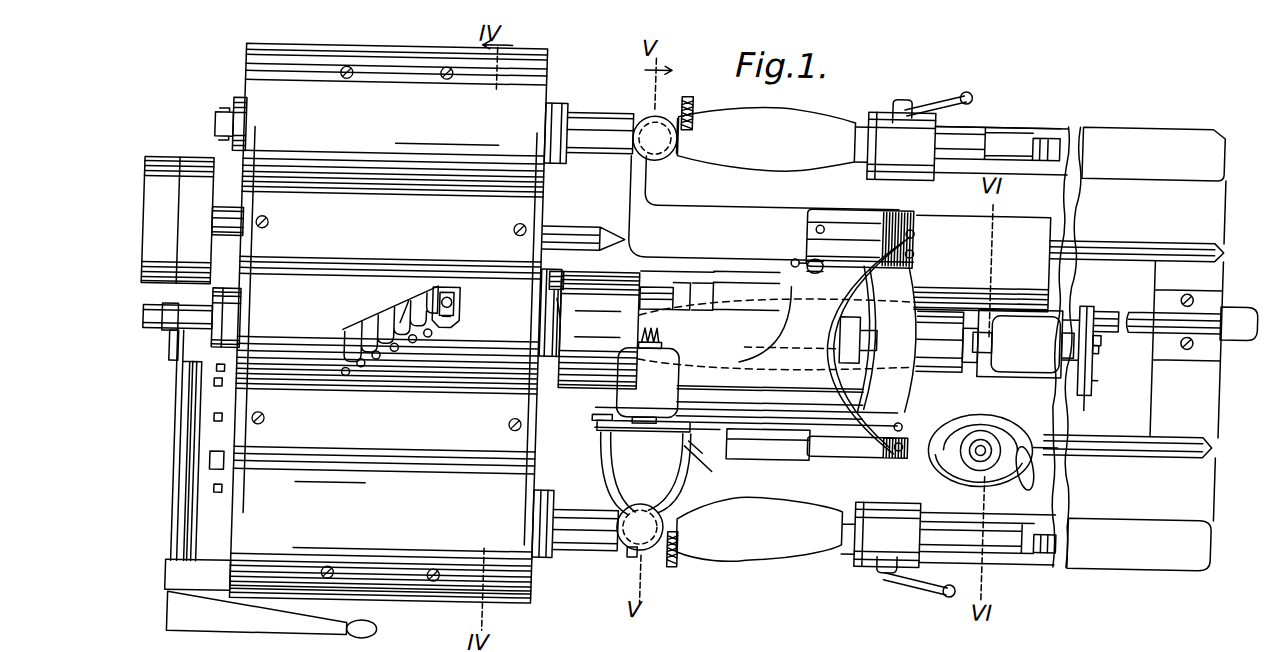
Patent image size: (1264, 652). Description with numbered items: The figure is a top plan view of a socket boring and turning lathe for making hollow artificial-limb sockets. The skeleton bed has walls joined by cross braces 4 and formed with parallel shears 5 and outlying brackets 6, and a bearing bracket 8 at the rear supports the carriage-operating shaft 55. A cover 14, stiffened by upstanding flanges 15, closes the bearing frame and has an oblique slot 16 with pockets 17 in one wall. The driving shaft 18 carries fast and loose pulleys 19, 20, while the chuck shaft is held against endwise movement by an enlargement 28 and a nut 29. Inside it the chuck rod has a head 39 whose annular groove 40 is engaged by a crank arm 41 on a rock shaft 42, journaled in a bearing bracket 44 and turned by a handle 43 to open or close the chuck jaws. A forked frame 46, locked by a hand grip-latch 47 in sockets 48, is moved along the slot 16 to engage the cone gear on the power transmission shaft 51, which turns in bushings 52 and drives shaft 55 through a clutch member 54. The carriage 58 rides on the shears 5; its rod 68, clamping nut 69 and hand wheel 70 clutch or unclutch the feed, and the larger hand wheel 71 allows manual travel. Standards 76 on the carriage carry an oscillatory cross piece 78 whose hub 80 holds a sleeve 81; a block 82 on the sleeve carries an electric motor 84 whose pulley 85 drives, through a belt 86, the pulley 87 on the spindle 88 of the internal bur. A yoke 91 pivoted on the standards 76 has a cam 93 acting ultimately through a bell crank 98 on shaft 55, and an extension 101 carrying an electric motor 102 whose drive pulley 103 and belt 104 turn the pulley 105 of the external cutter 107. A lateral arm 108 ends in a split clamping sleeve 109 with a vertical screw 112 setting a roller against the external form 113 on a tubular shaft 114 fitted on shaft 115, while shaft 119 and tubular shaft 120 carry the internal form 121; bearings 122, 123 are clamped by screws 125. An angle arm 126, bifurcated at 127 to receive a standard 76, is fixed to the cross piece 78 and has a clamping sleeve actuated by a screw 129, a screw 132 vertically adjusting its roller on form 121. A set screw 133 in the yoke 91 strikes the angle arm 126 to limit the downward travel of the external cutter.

The cross braces 4 is at (1202, 387).
The shears 5 is at (1187, 238).
The brackets 6 is at (1182, 130).
The bearing bracket 8 is at (1237, 299).
The cover 14 is at (388, 323).
The upstanding flanges 15 is at (256, 207).
The oblique slot 16 is at (381, 322).
The pockets 17 is at (402, 323).
The driving shaft 18 is at (217, 226).
The fast pulley 19 is at (155, 168).
The loose pulley 20 is at (186, 170).
The enlargement 28 is at (234, 301).
The nut 29 is at (212, 311).
The head 39 is at (143, 328).
The annular groove 40 is at (160, 336).
The crank arm 41 is at (173, 345).
The rock shaft 42 is at (181, 472).
The handle 43 is at (309, 632).
The bearing bracket 44 is at (187, 582).
The forked frame 46 is at (449, 294).
The hand grip-latch 47 is at (455, 322).
The sockets 48 is at (432, 342).
The power transmission shaft 51 is at (556, 271).
The bushings 52 is at (545, 273).
The clutch member 54 is at (560, 300).
The carriage-operating shaft 55 is at (656, 287).
The carriage 58 is at (982, 263).
The rod 68 is at (970, 459).
The clamping nut 69 is at (984, 456).
The hand wheel 70 is at (1024, 471).
The hand wheel 71 is at (1044, 443).
The standards 76 is at (912, 236).
The cross piece 78 is at (888, 339).
The hub portion 80 is at (901, 341).
The sleeve 81 is at (966, 319).
The block 82 is at (1084, 300).
The electric motor 84 is at (1023, 343).
The pulley 85 is at (1101, 333).
The belt 86 is at (1088, 390).
The pulley 87 is at (1098, 374).
The spindle 88 is at (1099, 344).
The yoke 91 is at (768, 297).
The cam 93 is at (956, 419).
The bell crank 98 is at (831, 342).
The extension 101 is at (769, 414).
The electric motor 102 is at (647, 386).
The drive pulley 103 is at (613, 446).
The belt 104 is at (696, 443).
The pulley 105 is at (694, 455).
The cutter 107 is at (649, 355).
The lateral arm 108 is at (644, 474).
The split clamping sleeve 109 is at (640, 560).
The vertical screw 112 is at (639, 527).
The external form 113 is at (786, 553).
The tubular shaft 114 is at (597, 552).
The shaft 115 is at (1052, 548).
The shaft 119 is at (1053, 132).
The tubular shaft 120 is at (588, 129).
The internal form 121 is at (779, 122).
The bearing 122 is at (880, 565).
The bearing 123 is at (866, 120).
The screws 125 is at (965, 93).
The angle arm 126 is at (721, 216).
The bifurcated portion 127 is at (802, 216).
The screw 129 is at (687, 107).
The screw 132 is at (657, 140).
The set screw 133 is at (790, 257).